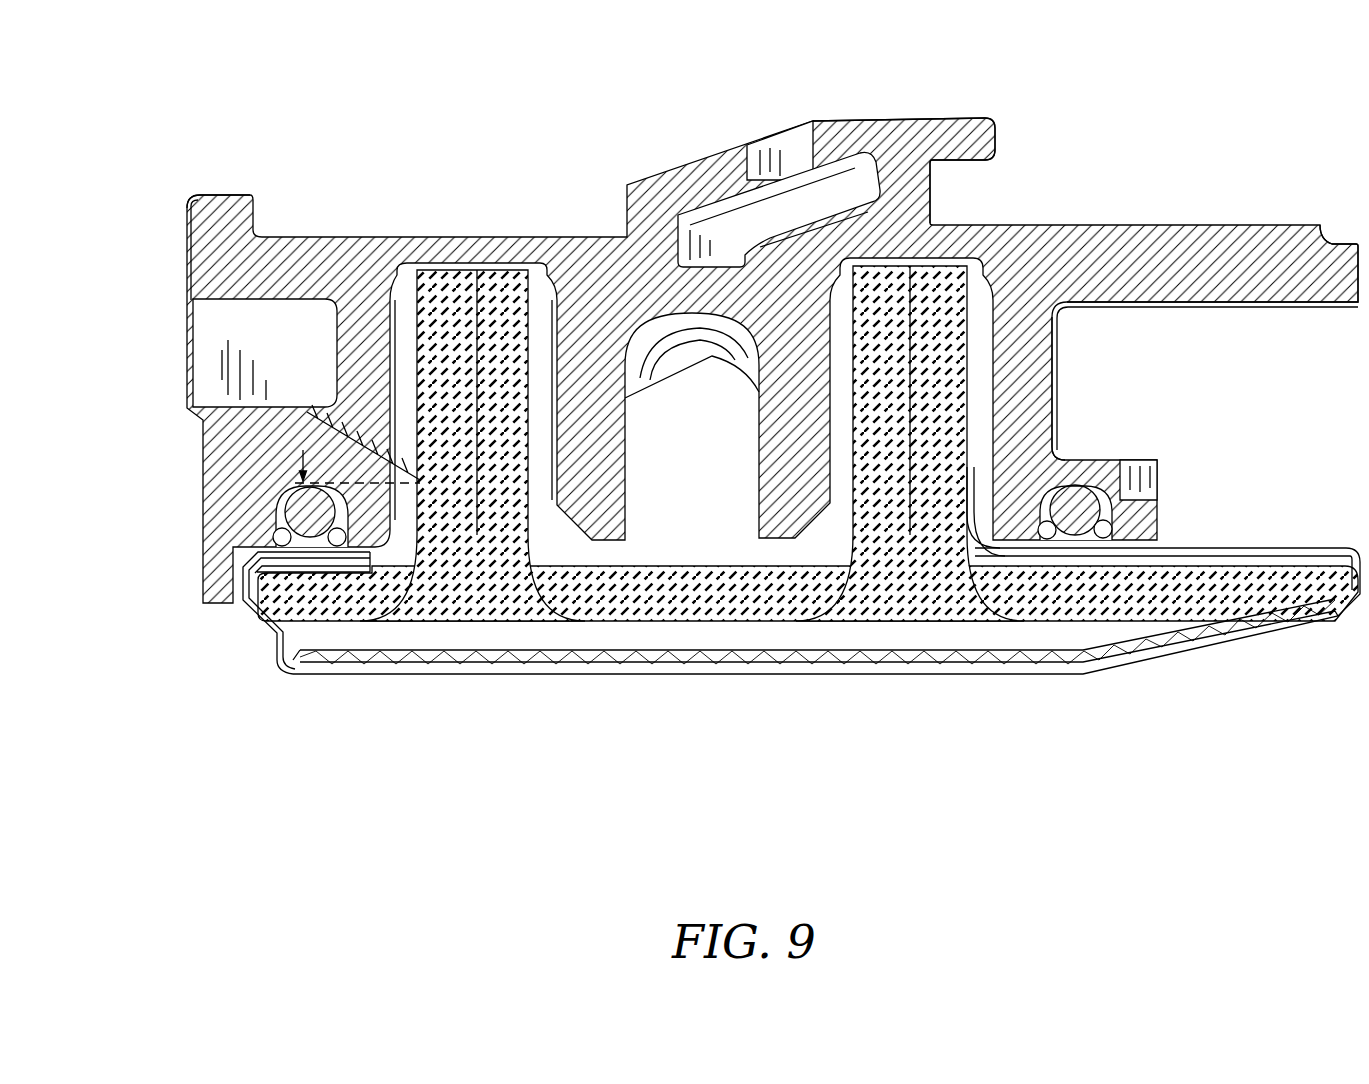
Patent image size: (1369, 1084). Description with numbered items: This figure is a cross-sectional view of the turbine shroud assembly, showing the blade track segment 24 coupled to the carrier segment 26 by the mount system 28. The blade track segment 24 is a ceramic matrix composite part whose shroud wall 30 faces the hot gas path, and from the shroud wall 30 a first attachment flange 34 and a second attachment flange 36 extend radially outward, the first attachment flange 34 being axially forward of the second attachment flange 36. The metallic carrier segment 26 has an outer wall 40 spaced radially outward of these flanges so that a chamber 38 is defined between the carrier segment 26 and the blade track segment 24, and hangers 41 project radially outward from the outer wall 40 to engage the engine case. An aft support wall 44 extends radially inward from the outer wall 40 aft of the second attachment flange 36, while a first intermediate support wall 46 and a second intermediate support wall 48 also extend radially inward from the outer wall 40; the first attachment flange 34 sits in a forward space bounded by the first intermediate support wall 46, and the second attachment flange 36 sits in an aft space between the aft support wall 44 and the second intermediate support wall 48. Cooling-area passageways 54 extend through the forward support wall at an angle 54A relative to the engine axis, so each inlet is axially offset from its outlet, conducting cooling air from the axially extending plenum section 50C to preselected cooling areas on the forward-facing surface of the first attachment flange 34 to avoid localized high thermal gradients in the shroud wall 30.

The blade track segment 24 is at (505, 742).
The carrier segment 26 is at (181, 126).
The mount system 28 is at (1270, 447).
The shroud wall 30 is at (686, 677).
The first attachment flange 34 is at (407, 495).
The second attachment flange 36 is at (840, 463).
The chamber 38 is at (697, 462).
The outer wall 40 is at (375, 237).
The hanger 41 is at (1003, 142).
The aft support wall 44 is at (1062, 372).
The first intermediate support wall 46 is at (553, 393).
The second intermediate support wall 48 is at (845, 382).
The axially extending section of plenum 50C is at (238, 323).
The cooling-area passageway 54 is at (373, 425).
The angle 54A is at (303, 430).